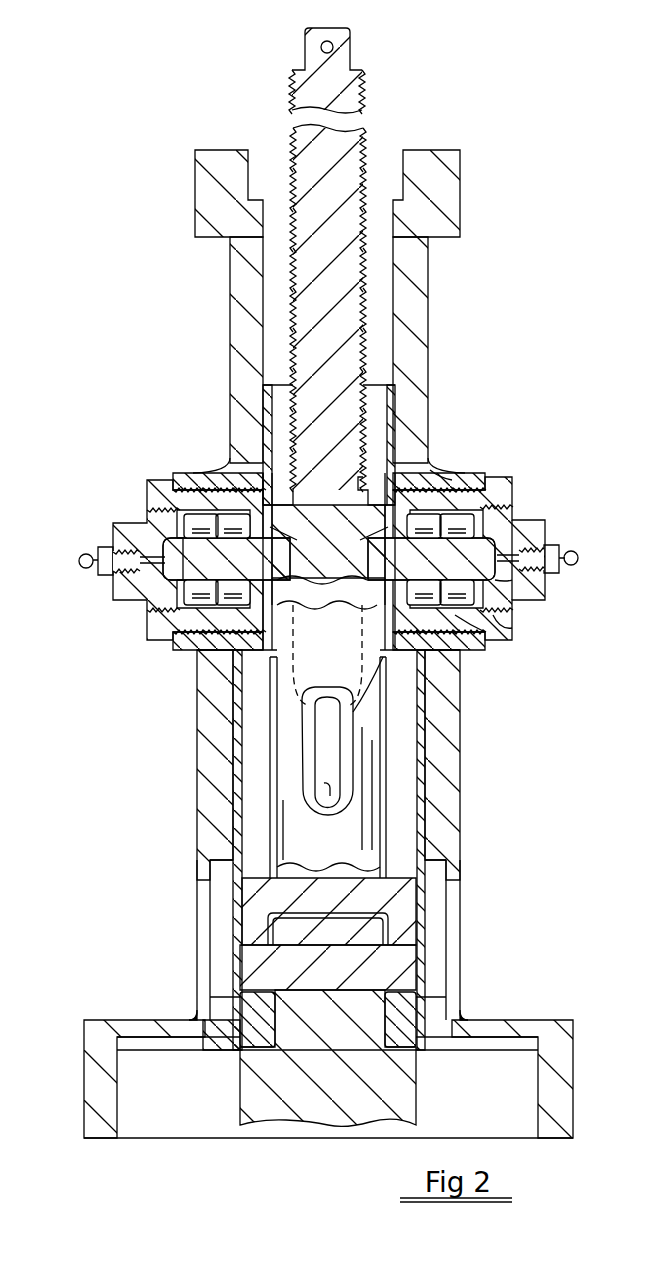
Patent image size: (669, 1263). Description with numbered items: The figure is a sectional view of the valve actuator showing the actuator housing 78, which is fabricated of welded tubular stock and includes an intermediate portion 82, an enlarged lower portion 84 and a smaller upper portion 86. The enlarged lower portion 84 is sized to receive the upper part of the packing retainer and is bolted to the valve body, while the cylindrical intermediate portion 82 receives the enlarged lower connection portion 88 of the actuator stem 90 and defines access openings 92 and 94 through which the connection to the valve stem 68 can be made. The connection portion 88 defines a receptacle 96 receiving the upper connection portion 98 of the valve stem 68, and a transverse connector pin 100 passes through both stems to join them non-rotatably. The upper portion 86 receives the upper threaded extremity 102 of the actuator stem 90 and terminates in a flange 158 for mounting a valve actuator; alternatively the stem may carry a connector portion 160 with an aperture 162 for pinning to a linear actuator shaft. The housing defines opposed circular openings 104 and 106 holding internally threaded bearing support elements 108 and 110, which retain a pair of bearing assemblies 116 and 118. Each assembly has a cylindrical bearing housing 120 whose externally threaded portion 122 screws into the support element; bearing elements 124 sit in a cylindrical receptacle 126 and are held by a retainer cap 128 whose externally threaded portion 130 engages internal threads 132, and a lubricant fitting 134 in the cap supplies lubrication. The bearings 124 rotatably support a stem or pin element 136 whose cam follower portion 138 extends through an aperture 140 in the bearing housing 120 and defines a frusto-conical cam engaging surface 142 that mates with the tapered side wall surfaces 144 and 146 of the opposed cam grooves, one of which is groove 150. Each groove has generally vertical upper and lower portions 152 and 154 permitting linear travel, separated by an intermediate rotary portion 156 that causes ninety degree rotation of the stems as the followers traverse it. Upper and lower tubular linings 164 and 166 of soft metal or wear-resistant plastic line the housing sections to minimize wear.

The valve stem 68 is at (400, 1110).
The actuator housing 78 is at (466, 363).
The intermediate portion 82 is at (215, 762).
The enlarged lower portion 84 is at (105, 1030).
The upper portion 86 is at (242, 300).
The connection portion 88 is at (400, 895).
The actuator stem 90 is at (372, 800).
The access opening 92 is at (215, 862).
The access opening 94 is at (452, 873).
The receptacle 96 is at (380, 1040).
The upper connection portion 98 is at (230, 1030).
The transverse connector pin 100 is at (400, 966).
The upper threaded extremity 102 is at (340, 326).
The circular opening 104 is at (178, 643).
The circular opening 106 is at (470, 648).
The bearing support element 108 is at (192, 480).
The bearing support element 110 is at (475, 478).
The bearing assembly 116 is at (198, 560).
The bearing assembly 118 is at (499, 555).
The bearing housing 120 is at (500, 497).
The externally threaded portion 122 is at (415, 476).
The bearing elements 124 is at (480, 640).
The bearing receptacle 126 is at (470, 520).
The retainer cap 128 is at (540, 533).
The externally threaded portion 130 is at (508, 628).
The internal threads 132 is at (540, 584).
The lubricant fitting 134 is at (578, 555).
The stem or pin element 136 is at (143, 603).
The cam follower portion 138 is at (280, 556).
The aperture 140 is at (293, 535).
The cam engaging surface 142 is at (296, 605).
The tapered side wall surface 144 is at (275, 800).
The tapered side wall surface 146 is at (362, 770).
The cam groove 150 is at (327, 805).
The upper portion 152 is at (372, 558).
The lower portion 154 is at (372, 752).
The intermediate rotary portion 156 is at (400, 688).
The flange 158 is at (440, 192).
The connector portion 160 is at (350, 66).
The aperture 162 is at (321, 47).
The upper tubular lining 164 is at (265, 412).
The lower tubular lining 166 is at (240, 722).